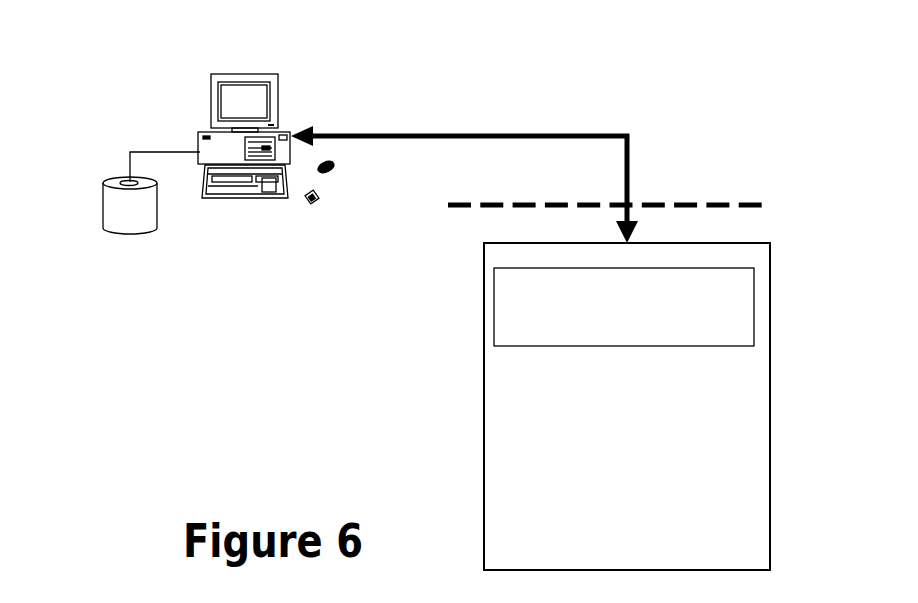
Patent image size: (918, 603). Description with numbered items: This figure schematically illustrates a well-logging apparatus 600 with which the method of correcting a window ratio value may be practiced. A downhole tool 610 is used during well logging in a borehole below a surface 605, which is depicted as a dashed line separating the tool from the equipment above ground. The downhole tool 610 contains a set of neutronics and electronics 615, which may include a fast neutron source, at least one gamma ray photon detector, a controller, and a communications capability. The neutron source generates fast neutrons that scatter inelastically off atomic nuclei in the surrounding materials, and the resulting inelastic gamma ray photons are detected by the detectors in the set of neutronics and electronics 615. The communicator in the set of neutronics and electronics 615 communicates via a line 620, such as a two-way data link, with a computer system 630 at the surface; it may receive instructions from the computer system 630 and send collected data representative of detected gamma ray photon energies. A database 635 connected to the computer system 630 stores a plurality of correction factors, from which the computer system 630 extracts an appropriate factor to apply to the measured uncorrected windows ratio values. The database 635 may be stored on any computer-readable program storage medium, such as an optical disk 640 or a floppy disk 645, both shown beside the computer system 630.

The apparatus 600 is at (148, 118).
The surface 605 is at (730, 203).
The downhole tool 610 is at (753, 257).
The set of neutronics and electronics 615 is at (493, 307).
The line 620 is at (632, 143).
The computer system 630 is at (280, 76).
The database 635 is at (131, 231).
The optical disk 640 is at (342, 168).
The floppy disk 645 is at (323, 200).